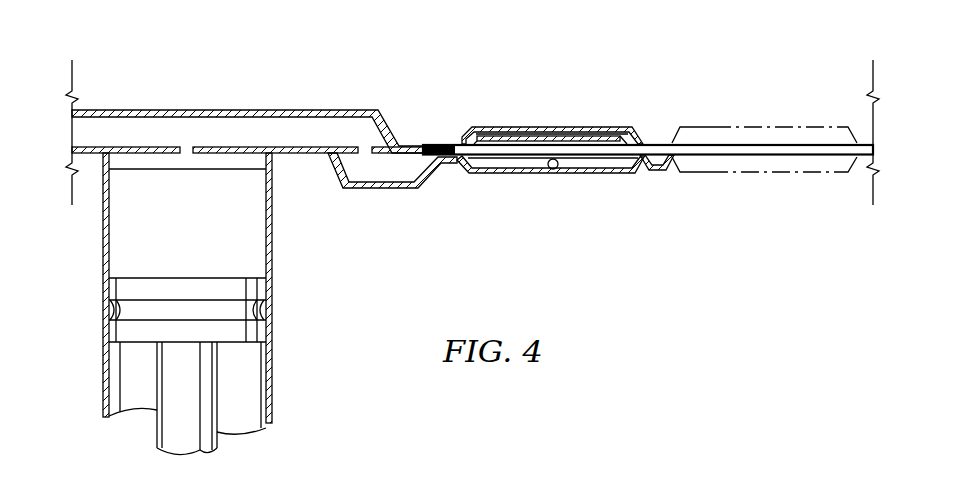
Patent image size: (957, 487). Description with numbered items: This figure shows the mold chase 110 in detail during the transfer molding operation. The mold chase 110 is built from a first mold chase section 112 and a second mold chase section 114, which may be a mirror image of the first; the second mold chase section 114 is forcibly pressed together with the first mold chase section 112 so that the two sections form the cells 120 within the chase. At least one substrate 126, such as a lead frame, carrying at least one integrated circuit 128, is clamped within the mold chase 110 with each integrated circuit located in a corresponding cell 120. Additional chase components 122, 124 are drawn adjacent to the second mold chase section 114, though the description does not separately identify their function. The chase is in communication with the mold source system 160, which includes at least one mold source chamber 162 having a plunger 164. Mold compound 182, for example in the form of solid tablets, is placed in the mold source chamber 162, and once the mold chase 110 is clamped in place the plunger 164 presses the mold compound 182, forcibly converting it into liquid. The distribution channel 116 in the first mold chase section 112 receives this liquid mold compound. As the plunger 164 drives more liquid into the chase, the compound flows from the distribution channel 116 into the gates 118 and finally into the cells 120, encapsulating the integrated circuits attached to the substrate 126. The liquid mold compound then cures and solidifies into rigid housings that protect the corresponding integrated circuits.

The mold chase 110 is at (148, 85).
The first mold chase section 112 is at (588, 173).
The second mold chase section 114 is at (580, 126).
The distribution channel 116 is at (263, 123).
The gates 118 is at (383, 178).
The cells 120 is at (553, 169).
The inner layer 122 is at (516, 137).
The intermediate layer 124 is at (491, 133).
The substrate 126 is at (438, 141).
The integrated circuit 128 is at (517, 142).
The mold source system 160 is at (94, 247).
The mold source chamber 162 is at (273, 372).
The plunger 164 is at (226, 337).
The mold compound 182 is at (203, 235).